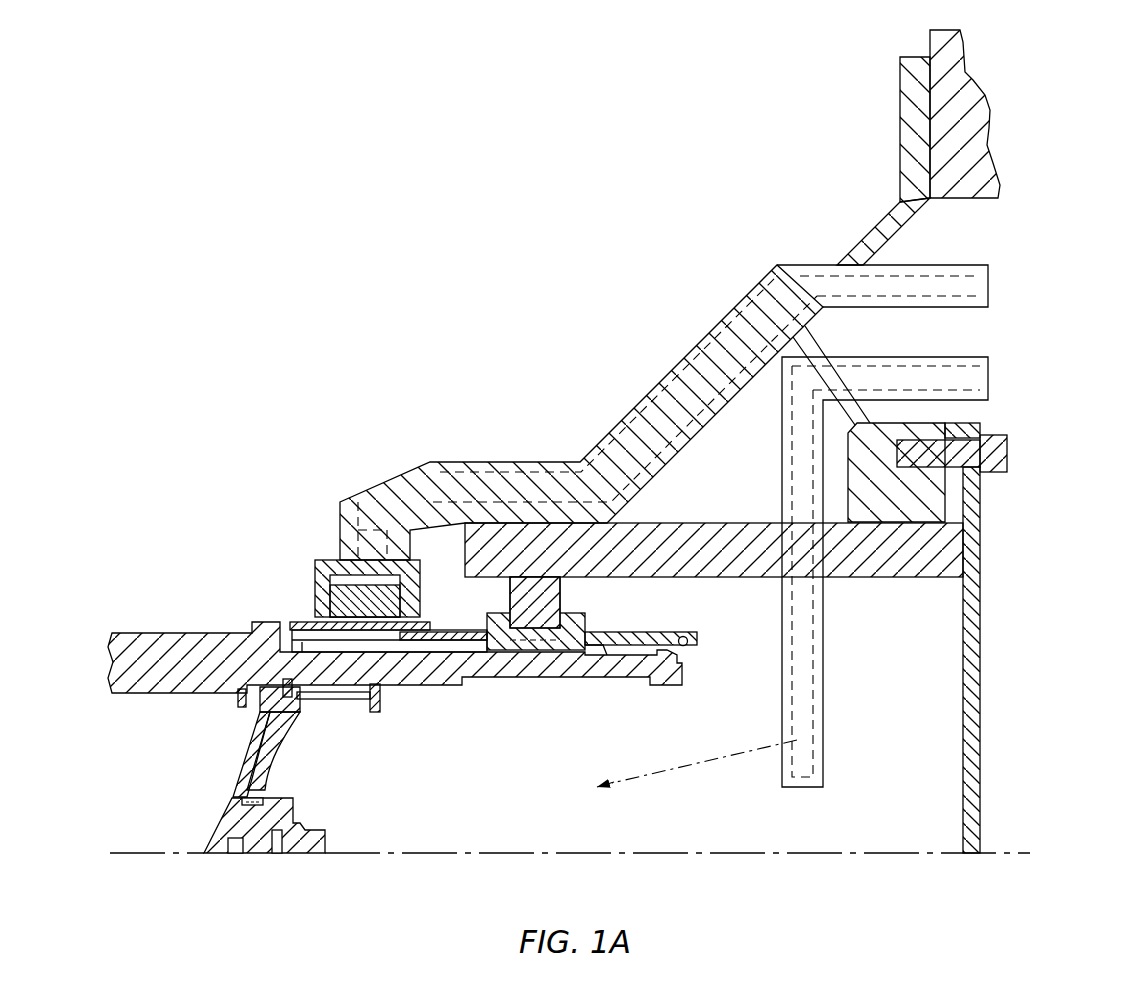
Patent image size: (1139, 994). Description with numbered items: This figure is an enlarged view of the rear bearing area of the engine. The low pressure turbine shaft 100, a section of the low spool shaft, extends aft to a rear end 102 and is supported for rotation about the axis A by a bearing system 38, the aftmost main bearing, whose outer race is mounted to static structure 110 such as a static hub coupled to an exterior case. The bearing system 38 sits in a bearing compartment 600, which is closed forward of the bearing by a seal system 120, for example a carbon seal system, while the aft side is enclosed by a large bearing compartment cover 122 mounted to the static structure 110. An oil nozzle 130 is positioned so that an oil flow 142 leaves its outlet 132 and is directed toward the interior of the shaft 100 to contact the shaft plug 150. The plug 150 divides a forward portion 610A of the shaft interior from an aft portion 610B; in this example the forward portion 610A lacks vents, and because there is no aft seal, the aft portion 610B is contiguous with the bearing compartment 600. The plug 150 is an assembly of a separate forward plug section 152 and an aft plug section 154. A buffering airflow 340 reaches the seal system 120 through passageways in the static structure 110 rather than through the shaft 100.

The low pressure turbine shaft 100 is at (176, 620).
The rear end 102 is at (702, 668).
The static structure 110 is at (653, 372).
The seal system 120 is at (312, 598).
The bearing compartment cover 122 is at (986, 665).
The oil nozzle 130 is at (840, 745).
The outlet 132 is at (797, 742).
The oil flow 142 is at (990, 380).
The shaft plug 150 is at (322, 780).
The forward plug section 152 is at (244, 748).
The aft plug section 154 is at (277, 752).
The buffering airflow 340 is at (977, 286).
The bearing system 38 is at (597, 603).
The bearing compartment 600 is at (437, 613).
The forward portion of the shaft interior 610A is at (116, 792).
The aft portion of the shaft interior 610B is at (569, 753).
The axis A is at (425, 858).